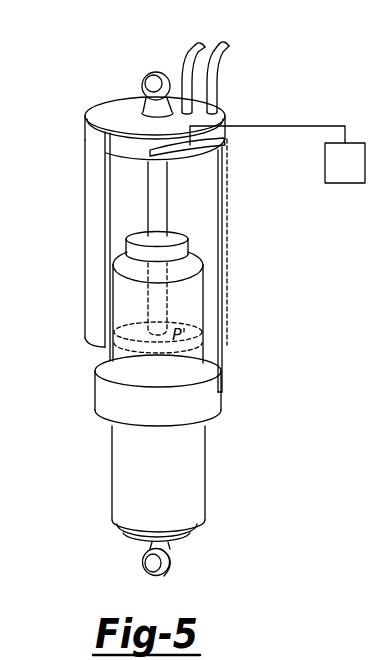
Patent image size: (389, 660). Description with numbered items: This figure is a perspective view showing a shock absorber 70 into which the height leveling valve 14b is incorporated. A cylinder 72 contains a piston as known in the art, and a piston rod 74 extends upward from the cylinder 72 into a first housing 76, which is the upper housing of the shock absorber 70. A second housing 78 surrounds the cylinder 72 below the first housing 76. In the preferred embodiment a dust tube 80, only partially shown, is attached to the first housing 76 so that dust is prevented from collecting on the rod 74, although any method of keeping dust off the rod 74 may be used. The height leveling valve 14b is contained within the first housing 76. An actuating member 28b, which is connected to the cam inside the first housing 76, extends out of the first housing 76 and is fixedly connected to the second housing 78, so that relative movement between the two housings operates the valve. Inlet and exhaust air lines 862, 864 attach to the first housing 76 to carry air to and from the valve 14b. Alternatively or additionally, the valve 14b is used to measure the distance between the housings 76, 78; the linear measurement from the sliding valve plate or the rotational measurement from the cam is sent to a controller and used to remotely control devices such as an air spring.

The shock absorber 70 is at (280, 71).
The inlet air line 862 is at (187, 60).
The exhaust air line 864 is at (228, 55).
The first housing 76 is at (236, 132).
The height leveling valve 14b is at (223, 150).
The actuating member 28b is at (223, 288).
The piston rod 74 is at (167, 195).
The dust tube 80 is at (100, 248).
The second housing 78 is at (197, 397).
The cylinder 72 is at (190, 468).